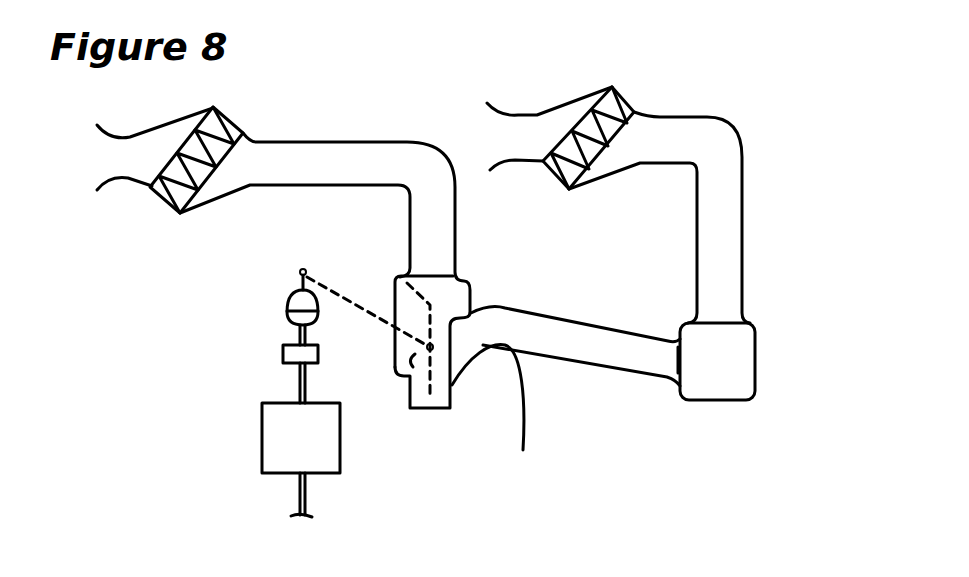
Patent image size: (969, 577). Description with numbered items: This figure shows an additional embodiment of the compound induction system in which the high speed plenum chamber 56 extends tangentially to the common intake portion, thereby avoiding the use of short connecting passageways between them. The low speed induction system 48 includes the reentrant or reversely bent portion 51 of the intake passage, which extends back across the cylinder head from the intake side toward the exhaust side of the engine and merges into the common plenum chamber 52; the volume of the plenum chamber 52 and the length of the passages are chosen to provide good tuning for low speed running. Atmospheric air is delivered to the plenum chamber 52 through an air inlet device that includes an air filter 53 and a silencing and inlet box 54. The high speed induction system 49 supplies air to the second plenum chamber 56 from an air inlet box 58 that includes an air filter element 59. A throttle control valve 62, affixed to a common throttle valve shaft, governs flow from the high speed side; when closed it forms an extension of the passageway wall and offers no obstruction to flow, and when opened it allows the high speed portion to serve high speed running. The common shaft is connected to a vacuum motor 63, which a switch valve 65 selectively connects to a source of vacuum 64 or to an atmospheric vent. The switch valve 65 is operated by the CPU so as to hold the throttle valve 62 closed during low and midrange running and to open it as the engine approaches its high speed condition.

The low speed induction system 48 is at (778, 190).
The high speed induction system 49 is at (378, 112).
The reentrant or reversely bent portion 51 is at (626, 373).
The plenum chamber 52 is at (757, 350).
The air filter 53 is at (636, 100).
The silencing and inlet box 54 is at (586, 210).
The second plenum chamber 56 is at (470, 283).
The air inlet box 58 is at (148, 205).
The air filter element 59 is at (240, 120).
The throttle control valve 62 is at (393, 268).
The vacuum motor 63 is at (287, 312).
The source of vacuum 64 is at (262, 440).
The switch valve 65 is at (283, 355).